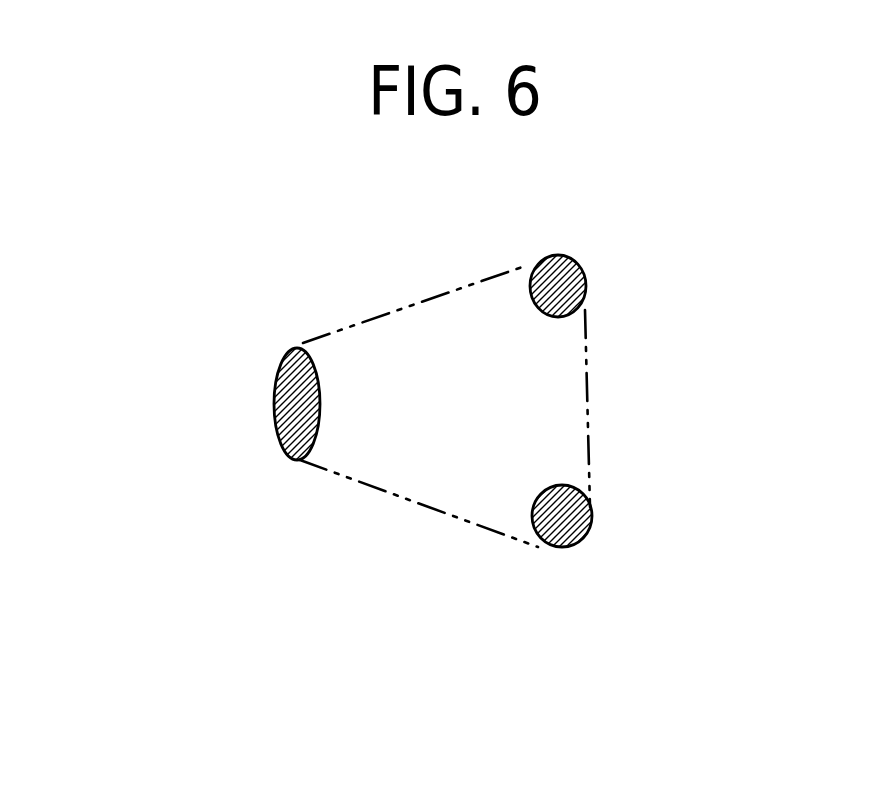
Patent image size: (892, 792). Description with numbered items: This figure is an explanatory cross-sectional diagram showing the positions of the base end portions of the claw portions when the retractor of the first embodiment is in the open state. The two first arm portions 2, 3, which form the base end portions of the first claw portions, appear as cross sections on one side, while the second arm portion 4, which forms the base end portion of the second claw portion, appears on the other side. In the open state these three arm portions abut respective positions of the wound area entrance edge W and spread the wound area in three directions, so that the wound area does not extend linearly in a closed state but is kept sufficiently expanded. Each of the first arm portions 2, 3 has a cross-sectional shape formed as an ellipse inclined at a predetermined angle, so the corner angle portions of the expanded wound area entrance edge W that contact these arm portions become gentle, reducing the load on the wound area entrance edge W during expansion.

The first arm portion 2 is at (557, 268).
The second arm portion 4 is at (297, 417).
The first arm portion 3 is at (567, 527).
The wound area entrance edge W is at (365, 480).